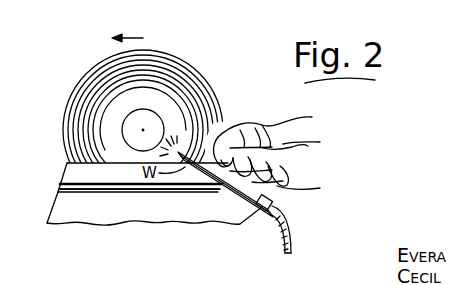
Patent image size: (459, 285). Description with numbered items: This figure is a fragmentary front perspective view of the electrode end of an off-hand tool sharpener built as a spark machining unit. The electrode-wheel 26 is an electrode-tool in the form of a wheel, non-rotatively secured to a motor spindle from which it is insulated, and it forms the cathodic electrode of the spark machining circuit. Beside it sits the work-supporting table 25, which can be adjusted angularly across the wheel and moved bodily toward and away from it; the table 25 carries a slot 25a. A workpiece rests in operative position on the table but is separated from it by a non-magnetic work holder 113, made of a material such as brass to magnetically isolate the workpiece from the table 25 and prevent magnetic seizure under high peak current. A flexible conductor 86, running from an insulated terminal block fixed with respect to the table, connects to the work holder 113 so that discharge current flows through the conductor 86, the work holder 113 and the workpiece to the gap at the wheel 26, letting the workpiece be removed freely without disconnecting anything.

The electrode-wheel 26 is at (173, 60).
The work-supporting table 25 is at (133, 221).
The slot in work support 25a is at (117, 190).
The work holder 113 is at (235, 197).
The flexible conductor 86 is at (287, 243).